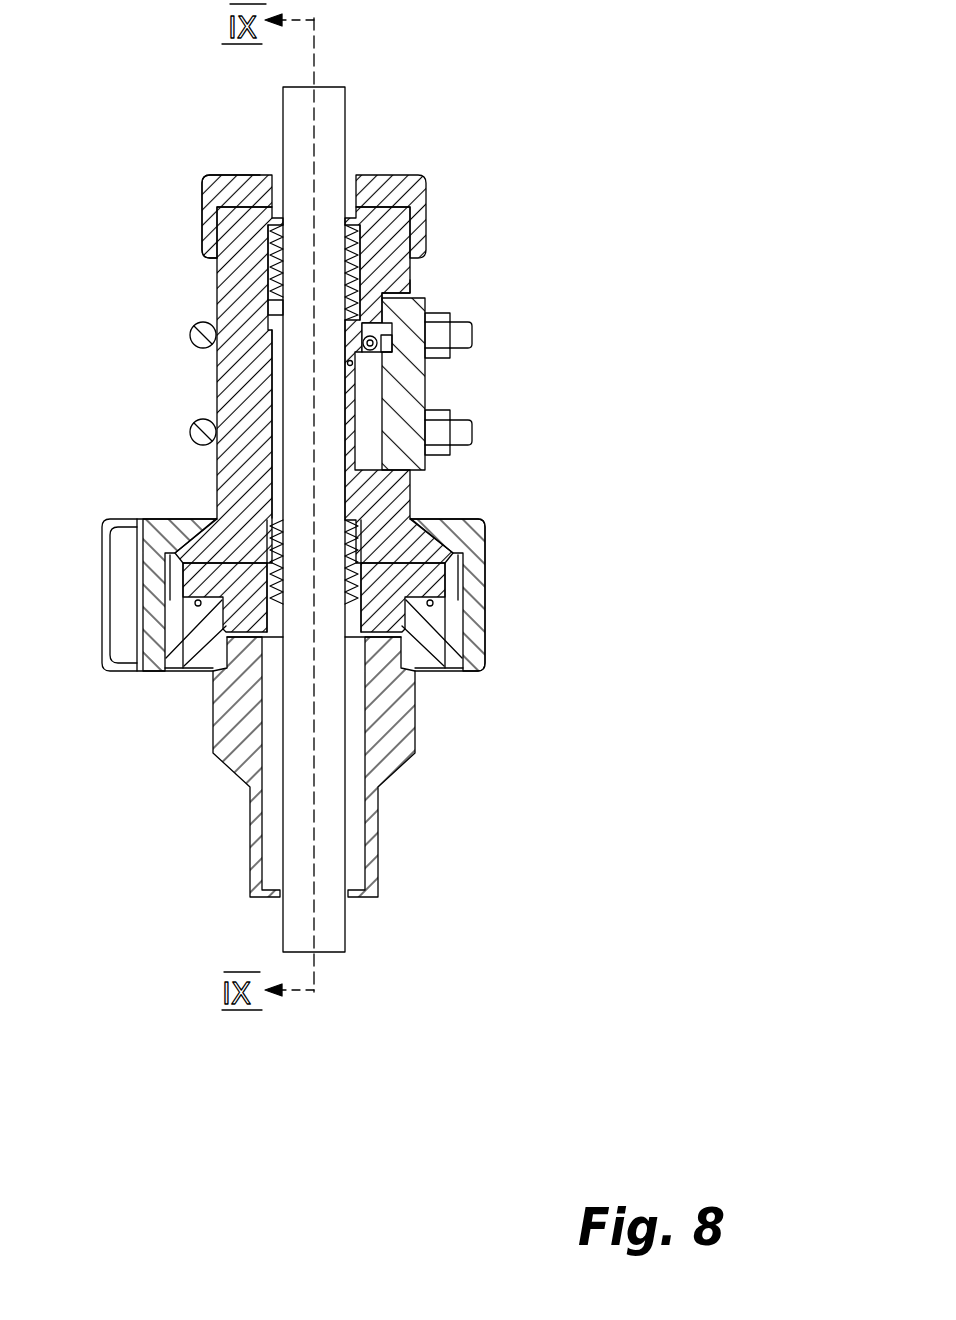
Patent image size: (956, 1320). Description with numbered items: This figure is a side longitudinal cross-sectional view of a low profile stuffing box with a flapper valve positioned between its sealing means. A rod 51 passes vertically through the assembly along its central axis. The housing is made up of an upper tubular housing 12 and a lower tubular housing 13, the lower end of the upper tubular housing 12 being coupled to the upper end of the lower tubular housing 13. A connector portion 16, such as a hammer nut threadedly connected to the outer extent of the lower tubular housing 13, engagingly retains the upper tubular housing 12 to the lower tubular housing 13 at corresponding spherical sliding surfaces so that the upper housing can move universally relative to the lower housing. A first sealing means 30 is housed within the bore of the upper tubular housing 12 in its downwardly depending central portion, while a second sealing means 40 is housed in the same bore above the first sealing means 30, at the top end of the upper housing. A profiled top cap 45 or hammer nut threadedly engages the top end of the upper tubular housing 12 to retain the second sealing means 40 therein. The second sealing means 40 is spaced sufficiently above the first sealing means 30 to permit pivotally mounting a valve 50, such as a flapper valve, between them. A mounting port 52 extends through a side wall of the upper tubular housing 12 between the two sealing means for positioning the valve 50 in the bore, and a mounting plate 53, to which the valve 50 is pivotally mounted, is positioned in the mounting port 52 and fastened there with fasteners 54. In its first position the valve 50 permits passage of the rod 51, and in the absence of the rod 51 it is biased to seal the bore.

The rod 51 is at (347, 107).
The second sealing means 40 is at (413, 178).
The profiled top cap 45 is at (207, 175).
The upper tubular housing 12 is at (215, 290).
The mounting port 52 is at (412, 285).
The mounting plate 53 is at (425, 310).
The valve 50 is at (405, 377).
The fasteners 54 is at (190, 423).
The first sealing means 30 is at (400, 517).
The connector portion 16 is at (102, 597).
The lower tubular housing 13 is at (393, 773).